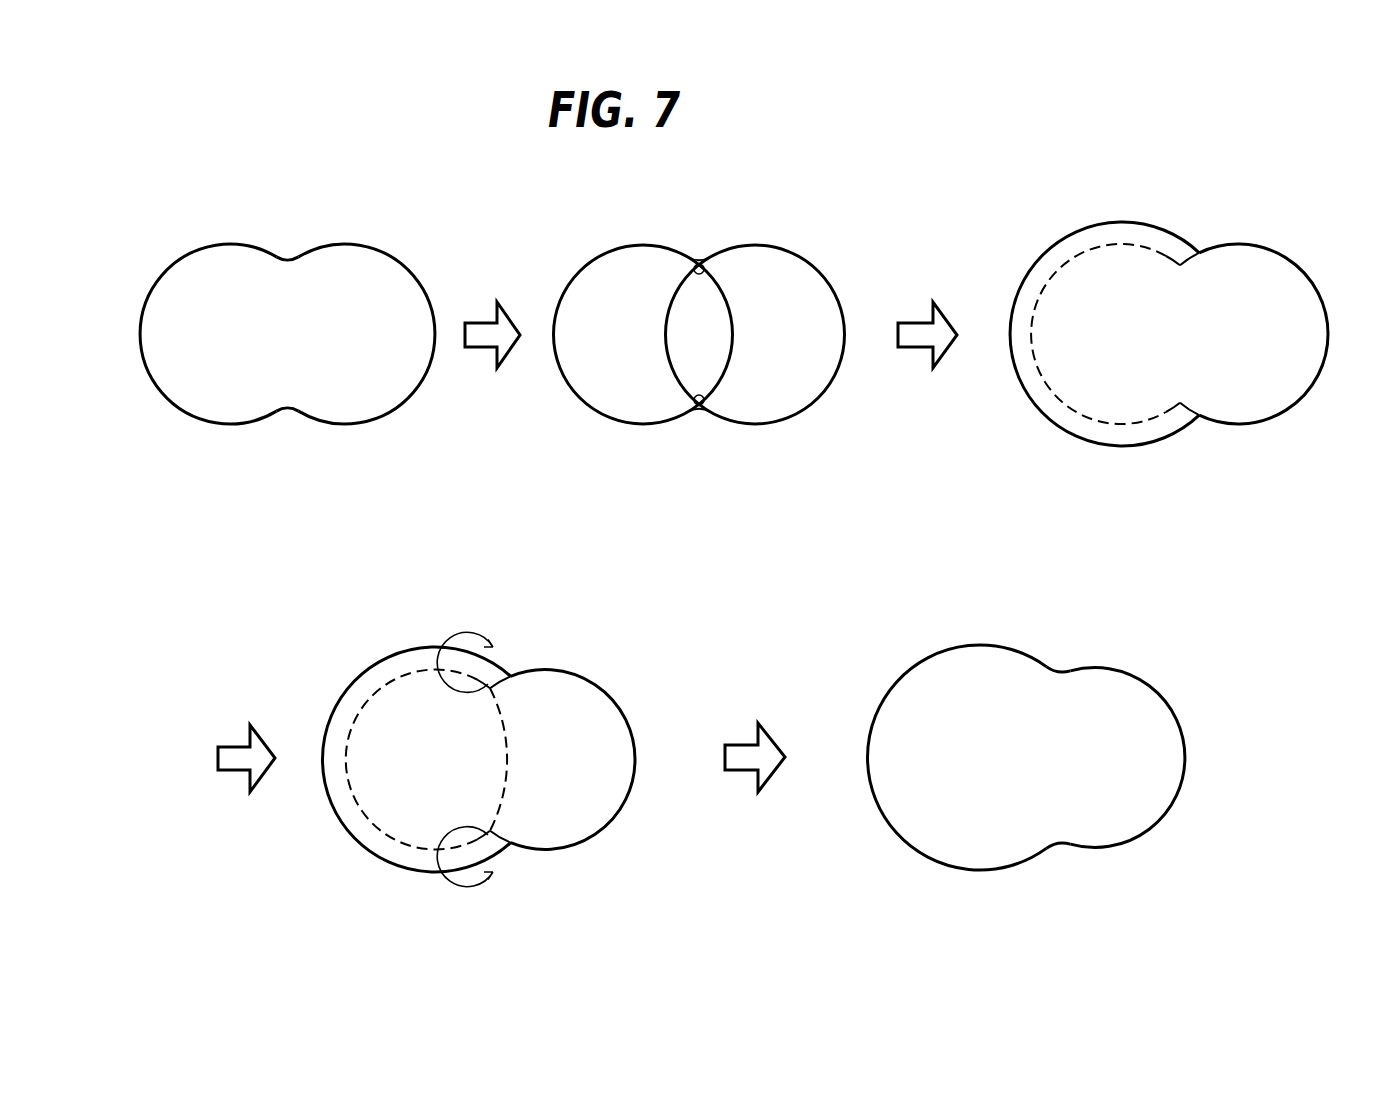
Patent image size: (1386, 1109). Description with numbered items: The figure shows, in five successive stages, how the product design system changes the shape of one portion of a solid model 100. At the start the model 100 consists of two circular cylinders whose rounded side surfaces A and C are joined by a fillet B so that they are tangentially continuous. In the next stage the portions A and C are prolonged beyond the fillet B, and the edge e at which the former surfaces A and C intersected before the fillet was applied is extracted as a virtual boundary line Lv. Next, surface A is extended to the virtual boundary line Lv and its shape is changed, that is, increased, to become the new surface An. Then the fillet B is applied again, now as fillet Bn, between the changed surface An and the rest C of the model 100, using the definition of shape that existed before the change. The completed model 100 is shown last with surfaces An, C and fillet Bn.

The solid model 100 is at (318, 238).
The side surface A is at (144, 306).
The fillet B is at (289, 408).
The side surface C is at (407, 268).
The new portion of surface A An is at (1118, 222).
The new fillet Bn is at (510, 676).
The edge e is at (705, 397).
The virtual boundary line Lv is at (692, 280).